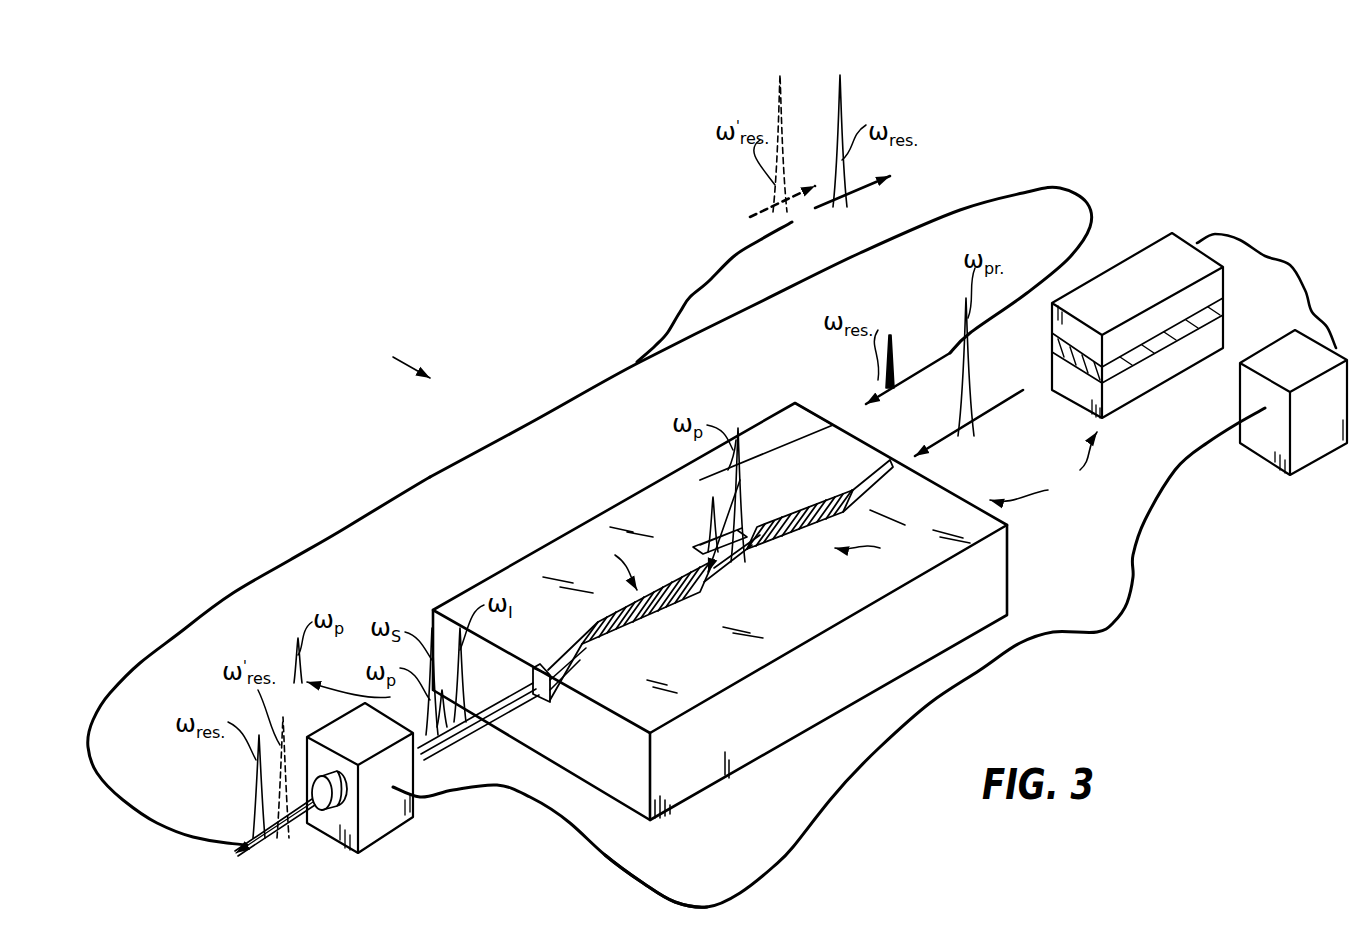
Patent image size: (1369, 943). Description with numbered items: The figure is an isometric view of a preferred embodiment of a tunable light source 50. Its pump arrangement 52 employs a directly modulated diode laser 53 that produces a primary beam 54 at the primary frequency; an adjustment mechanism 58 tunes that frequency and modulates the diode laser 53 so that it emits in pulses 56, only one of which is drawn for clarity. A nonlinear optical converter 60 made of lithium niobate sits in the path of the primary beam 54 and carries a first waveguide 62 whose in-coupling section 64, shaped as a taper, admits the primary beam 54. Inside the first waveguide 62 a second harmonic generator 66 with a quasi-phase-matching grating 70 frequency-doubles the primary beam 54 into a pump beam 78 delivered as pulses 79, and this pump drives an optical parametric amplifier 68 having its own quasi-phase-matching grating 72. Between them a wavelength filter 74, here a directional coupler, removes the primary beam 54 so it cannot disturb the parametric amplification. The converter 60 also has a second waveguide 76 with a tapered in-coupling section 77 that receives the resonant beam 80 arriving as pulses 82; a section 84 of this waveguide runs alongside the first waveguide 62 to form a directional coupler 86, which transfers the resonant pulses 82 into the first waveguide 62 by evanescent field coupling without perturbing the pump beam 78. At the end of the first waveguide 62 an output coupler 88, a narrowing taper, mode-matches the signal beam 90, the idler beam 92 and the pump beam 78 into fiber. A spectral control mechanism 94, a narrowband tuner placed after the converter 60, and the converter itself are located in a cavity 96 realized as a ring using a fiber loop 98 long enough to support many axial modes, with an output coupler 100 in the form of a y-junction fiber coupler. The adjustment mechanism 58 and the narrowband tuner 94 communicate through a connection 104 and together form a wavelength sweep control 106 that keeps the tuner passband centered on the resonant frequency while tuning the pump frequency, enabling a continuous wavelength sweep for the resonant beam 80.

The tunable light source 50 is at (387, 359).
The pump arrangement 52 is at (1043, 467).
The diode laser 53 is at (1148, 248).
The primary beam 54 is at (935, 452).
The pulses 56 is at (972, 382).
The adjustment mechanism 58 is at (1298, 470).
The nonlinear optical converter 60 is at (548, 548).
The first waveguide 62 is at (868, 508).
The in-coupling section 64 is at (876, 455).
The second harmonic generator 66 is at (875, 543).
The optical parametric amplifier 68 is at (610, 565).
The quasi-phase-matching grating 70 is at (818, 546).
The quasi-phase-matching grating 72 is at (666, 622).
The wavelength filter 74 is at (768, 552).
The second waveguide 76 is at (762, 445).
The in-coupling section 77 is at (820, 420).
The pump beam 78 is at (530, 675).
The pulses 79 is at (726, 470).
The resonant beam 80 is at (875, 195).
The pulses 82 is at (700, 510).
The section 84 is at (710, 538).
The directional coupler 86 is at (698, 552).
The output coupler 88 is at (578, 660).
The signal beam 90 is at (485, 708).
The idler beam 92 is at (540, 702).
The spectral control mechanism 94 is at (392, 826).
The cavity 96 is at (250, 537).
The fiber loop 98 is at (414, 495).
The output coupler 100 is at (648, 360).
The connection 104 is at (642, 880).
The wavelength sweep control 106 is at (1200, 498).